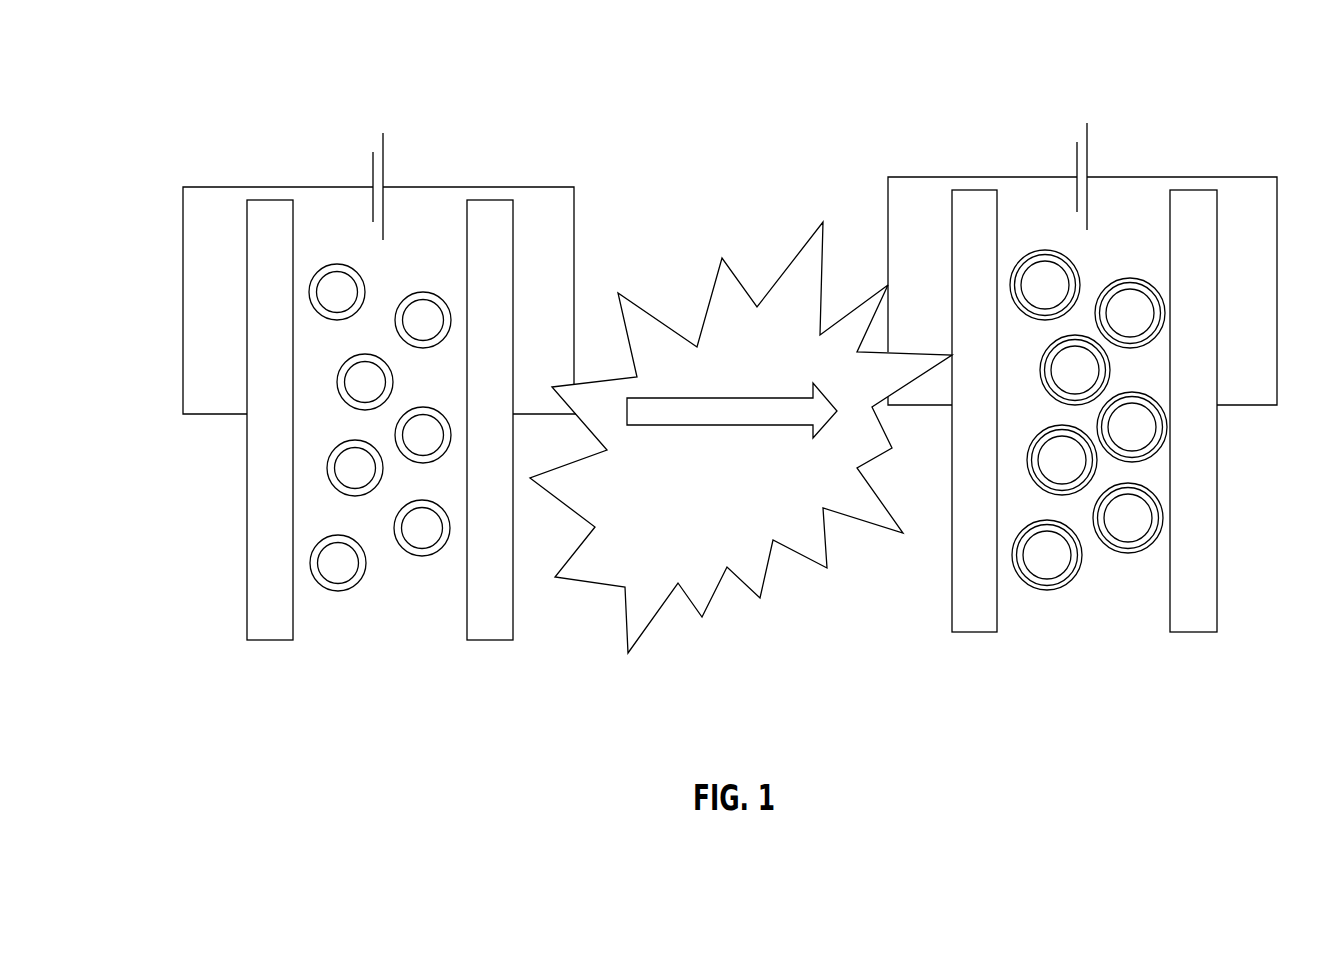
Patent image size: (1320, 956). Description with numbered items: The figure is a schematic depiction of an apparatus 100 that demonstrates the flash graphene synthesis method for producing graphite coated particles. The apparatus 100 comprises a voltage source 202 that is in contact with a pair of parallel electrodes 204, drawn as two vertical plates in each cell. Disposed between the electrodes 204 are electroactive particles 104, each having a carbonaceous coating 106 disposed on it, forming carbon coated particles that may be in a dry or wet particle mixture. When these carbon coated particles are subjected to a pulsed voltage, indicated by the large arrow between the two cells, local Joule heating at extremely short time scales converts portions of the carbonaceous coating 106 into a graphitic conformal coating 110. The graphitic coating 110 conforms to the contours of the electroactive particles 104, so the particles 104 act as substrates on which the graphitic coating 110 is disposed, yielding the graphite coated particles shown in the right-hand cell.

The apparatus 100 is at (182, 87).
The voltage source 202 is at (372, 167).
The parallel electrodes 204 is at (270, 625).
The electroactive particle 104 is at (357, 467).
The carbonaceous coating 106 is at (326, 463).
The graphitic conformal coating 110 is at (1163, 510).